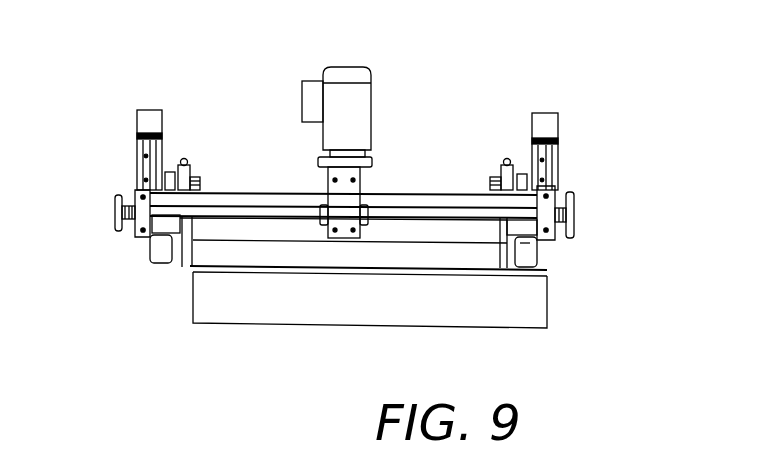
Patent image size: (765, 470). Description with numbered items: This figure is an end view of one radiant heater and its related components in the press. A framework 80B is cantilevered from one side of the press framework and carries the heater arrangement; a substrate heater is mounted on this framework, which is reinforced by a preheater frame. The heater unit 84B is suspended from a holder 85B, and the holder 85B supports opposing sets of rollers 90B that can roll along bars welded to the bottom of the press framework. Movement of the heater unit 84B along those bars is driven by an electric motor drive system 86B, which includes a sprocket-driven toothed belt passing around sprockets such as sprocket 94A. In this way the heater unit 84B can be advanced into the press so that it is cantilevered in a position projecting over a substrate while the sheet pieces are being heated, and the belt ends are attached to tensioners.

The framework 80B is at (562, 135).
The heater unit 84B is at (482, 310).
The holder 85B is at (190, 265).
The electric motor drive system 86B is at (405, 57).
The rollers 90B is at (172, 172).
The sprocket 94A is at (118, 194).